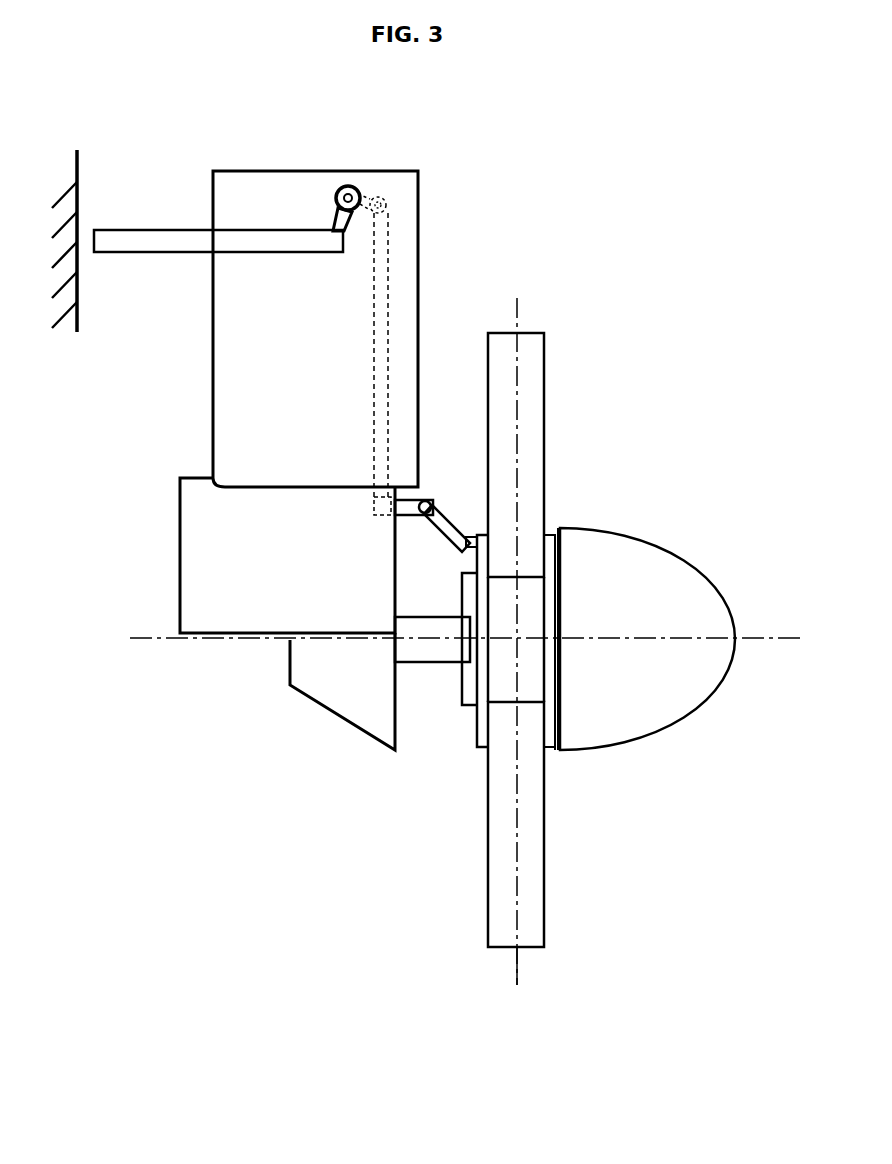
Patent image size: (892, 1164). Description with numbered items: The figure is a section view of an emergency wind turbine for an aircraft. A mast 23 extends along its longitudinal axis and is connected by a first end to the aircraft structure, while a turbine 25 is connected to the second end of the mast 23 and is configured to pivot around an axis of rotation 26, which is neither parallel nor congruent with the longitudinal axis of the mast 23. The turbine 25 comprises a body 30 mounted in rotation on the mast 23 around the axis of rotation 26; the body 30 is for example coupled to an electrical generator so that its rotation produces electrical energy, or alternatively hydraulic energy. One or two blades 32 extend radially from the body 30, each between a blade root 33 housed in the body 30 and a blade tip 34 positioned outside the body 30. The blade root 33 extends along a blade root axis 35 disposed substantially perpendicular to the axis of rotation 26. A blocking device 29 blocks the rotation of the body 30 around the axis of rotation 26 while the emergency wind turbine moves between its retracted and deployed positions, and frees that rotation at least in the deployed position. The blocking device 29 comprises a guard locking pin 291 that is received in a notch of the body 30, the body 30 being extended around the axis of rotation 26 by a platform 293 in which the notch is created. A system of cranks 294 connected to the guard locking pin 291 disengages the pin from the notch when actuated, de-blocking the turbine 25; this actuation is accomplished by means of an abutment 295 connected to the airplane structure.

The mast 23 is at (247, 349).
The turbine 25 is at (673, 541).
The axis of rotation 26 is at (787, 640).
The blocking device 29 is at (267, 224).
The body 30 is at (594, 548).
The blade 32 is at (532, 460).
The blade root 33 is at (528, 565).
The blade tip 34 is at (526, 330).
The blade root axis 35 is at (520, 962).
The guard locking pin 291 is at (448, 526).
The platform 293 is at (445, 530).
The system of cranks 294 is at (148, 246).
The abutment 295 is at (78, 173).